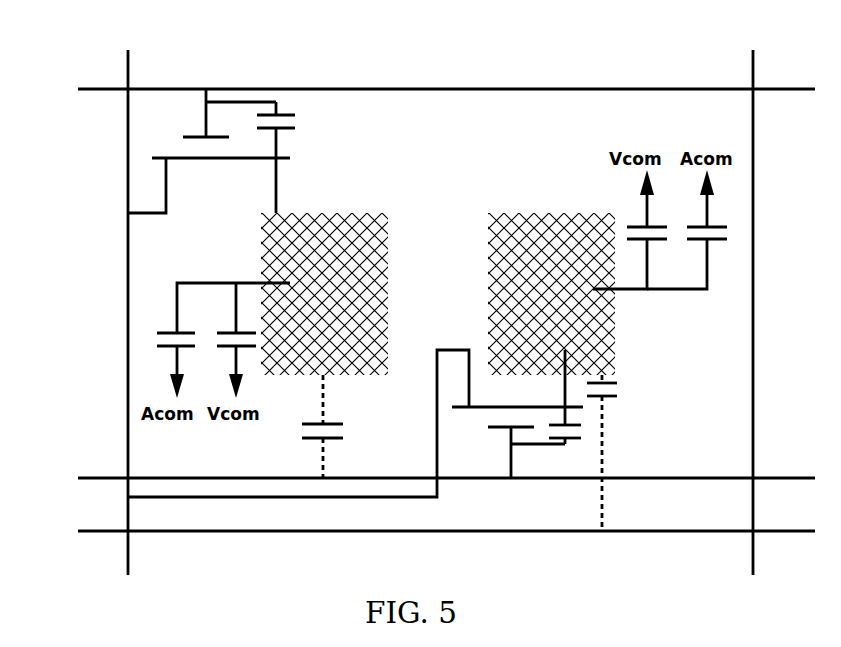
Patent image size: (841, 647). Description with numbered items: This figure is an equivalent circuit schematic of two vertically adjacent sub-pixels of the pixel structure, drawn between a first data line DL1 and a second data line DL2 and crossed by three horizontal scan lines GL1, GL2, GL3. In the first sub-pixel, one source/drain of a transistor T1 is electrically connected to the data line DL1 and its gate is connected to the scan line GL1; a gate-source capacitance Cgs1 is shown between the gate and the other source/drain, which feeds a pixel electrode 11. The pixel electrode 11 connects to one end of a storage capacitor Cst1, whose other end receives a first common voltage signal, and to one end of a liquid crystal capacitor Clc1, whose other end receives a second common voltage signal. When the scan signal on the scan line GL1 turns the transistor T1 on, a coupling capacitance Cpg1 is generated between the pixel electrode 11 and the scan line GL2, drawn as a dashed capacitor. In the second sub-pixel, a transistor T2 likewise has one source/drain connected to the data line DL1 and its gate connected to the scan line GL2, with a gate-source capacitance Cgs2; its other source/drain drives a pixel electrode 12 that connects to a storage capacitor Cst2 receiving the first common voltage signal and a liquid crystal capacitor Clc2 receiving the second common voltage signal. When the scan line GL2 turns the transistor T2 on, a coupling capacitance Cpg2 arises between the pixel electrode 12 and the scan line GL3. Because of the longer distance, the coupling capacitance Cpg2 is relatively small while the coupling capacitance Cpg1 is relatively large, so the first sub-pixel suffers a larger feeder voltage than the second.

The pixel electrode 11 is at (332, 213).
The pixel electrode 12 is at (520, 213).
The data line DL1 is at (130, 297).
The data line DL2 is at (755, 297).
The scan line GL1 is at (415, 90).
The scan line GL2 is at (415, 423).
The scan line GL3 is at (415, 532).
The transistor T1 is at (209, 151).
The transistor T2 is at (517, 414).
The gate-source capacitance Cgs1 is at (293, 157).
The gate-source capacitance Cgs2 is at (562, 447).
The storage capacitor Cst1 is at (223, 340).
The storage capacitor Cst2 is at (687, 229).
The liquid crystal capacitor Clc1 is at (224, 340).
The liquid crystal capacitor Clc2 is at (642, 229).
The coupling capacitance Cpg1 is at (340, 426).
The coupling capacitance Cpg2 is at (622, 453).